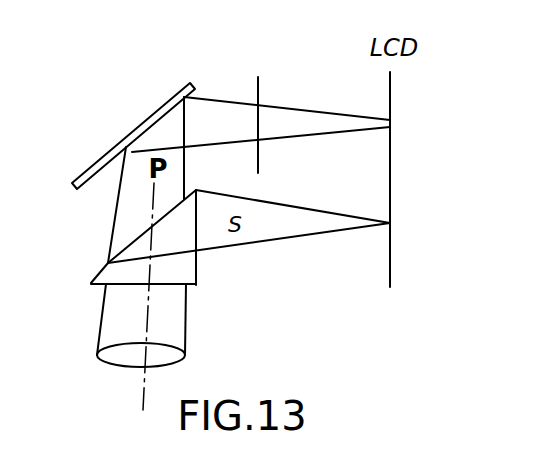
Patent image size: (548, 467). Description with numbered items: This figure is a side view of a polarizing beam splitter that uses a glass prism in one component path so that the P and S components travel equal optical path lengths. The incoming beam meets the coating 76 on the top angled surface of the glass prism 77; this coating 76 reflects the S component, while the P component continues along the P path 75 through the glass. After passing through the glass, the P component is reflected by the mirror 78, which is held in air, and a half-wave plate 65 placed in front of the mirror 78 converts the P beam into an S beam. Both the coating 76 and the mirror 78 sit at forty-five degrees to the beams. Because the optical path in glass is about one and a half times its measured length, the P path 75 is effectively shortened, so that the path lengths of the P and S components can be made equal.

The mirror 78 is at (140, 122).
The half-wave plate 65 is at (259, 88).
The coating 76 is at (152, 227).
The P path 75 is at (280, 233).
The glass prism 77 is at (158, 267).